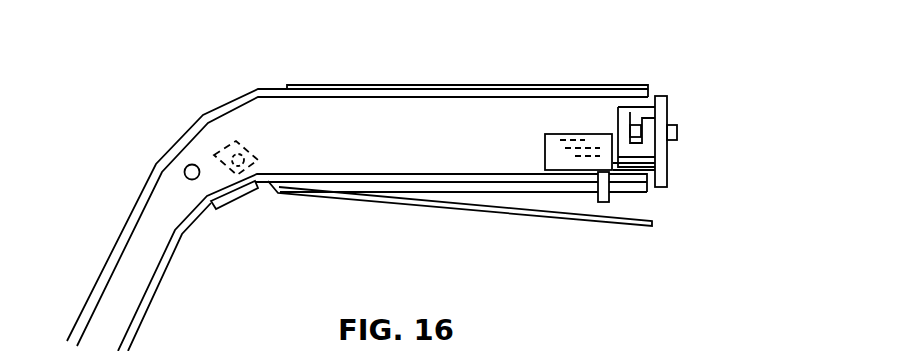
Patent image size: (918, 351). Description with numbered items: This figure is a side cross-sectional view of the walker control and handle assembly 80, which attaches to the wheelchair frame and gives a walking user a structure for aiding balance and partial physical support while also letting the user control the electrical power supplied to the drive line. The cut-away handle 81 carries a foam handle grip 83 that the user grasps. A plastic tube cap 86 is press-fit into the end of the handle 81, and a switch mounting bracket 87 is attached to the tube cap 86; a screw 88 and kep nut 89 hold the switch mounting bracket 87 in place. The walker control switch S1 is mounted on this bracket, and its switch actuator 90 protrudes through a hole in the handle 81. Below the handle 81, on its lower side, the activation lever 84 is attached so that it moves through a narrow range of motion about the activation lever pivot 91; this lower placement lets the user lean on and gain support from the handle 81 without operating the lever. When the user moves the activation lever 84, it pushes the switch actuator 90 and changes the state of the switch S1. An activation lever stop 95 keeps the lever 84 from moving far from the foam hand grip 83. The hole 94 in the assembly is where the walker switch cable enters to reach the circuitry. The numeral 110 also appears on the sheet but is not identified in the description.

The walker control and handle assembly 80 is at (130, 112).
The left handle 81 is at (230, 102).
The foam handle grip 83 is at (448, 84).
The forward activation lever 84 is at (514, 224).
The tube cap 86 is at (662, 115).
The switch mounting bracket 87 is at (628, 152).
The screw 88 is at (676, 134).
The kep nut 89 is at (634, 125).
The switch actuator 90 is at (607, 206).
The activation lever pivot 91 is at (237, 163).
The hole 94 is at (184, 171).
The activation lever stop 95 is at (217, 210).
The walker control switch S1 is at (545, 149).
The base 110 is at (733, 334).